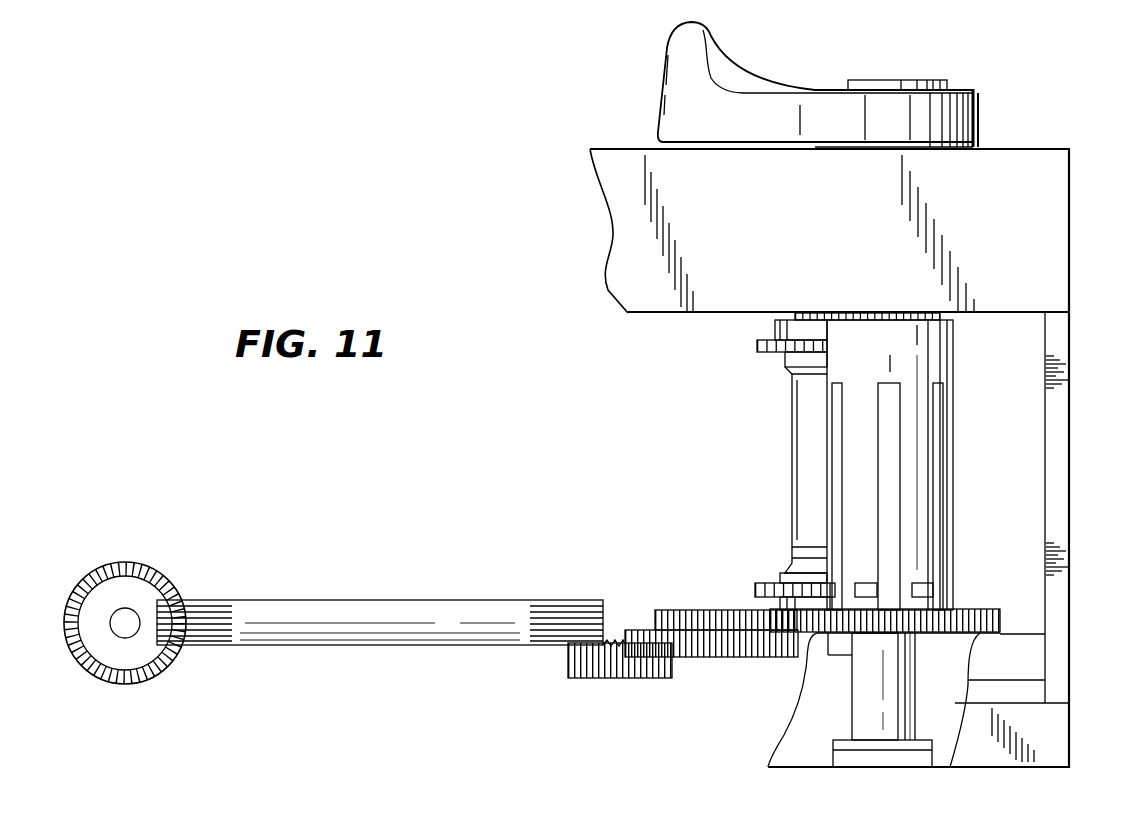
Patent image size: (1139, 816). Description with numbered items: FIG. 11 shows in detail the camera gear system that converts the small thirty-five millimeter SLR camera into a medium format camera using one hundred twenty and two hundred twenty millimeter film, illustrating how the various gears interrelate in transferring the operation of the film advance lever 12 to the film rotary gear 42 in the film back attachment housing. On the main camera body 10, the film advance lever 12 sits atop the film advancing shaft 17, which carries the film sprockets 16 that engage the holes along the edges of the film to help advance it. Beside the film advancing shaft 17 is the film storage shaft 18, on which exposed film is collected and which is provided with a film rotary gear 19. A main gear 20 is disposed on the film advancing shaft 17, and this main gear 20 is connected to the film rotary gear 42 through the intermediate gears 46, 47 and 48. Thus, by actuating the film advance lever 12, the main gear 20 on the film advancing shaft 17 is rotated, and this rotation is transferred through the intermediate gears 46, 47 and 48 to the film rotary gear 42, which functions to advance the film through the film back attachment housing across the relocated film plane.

The main camera body 10 is at (1060, 210).
The film advance lever 12 is at (662, 90).
The film sprockets 16 is at (757, 347).
The film advancing shaft 17 is at (800, 424).
The film storage shaft 18 is at (932, 355).
The film rotary gear 19 is at (1000, 618).
The main gear 20 is at (782, 610).
The film rotary gear 42 is at (150, 570).
The intermediate gear 46 is at (670, 610).
The intermediate gear 47 is at (573, 678).
The intermediate gear 48 is at (398, 598).